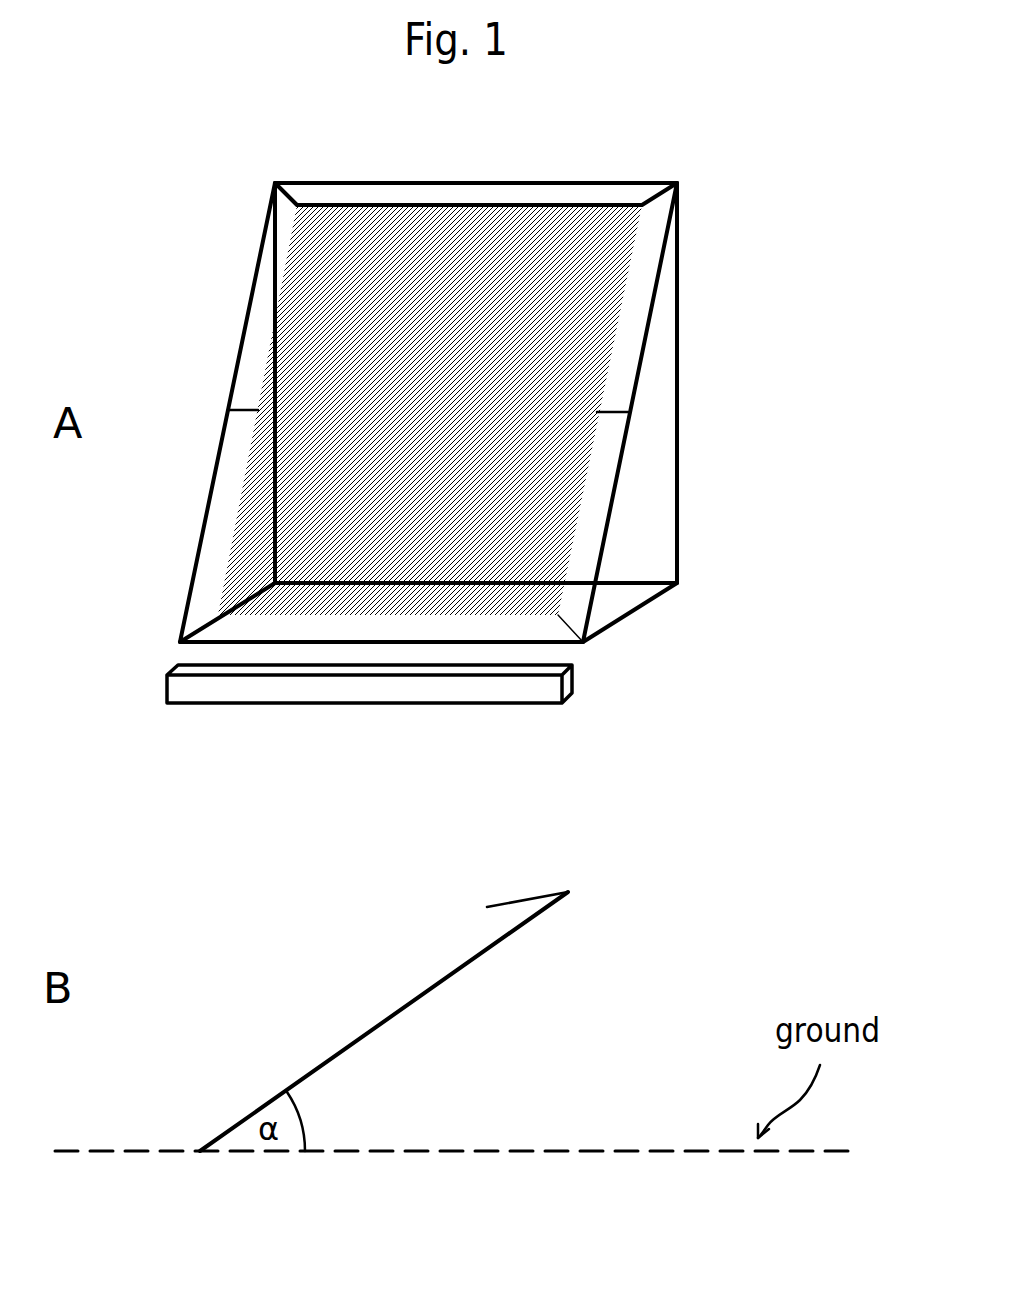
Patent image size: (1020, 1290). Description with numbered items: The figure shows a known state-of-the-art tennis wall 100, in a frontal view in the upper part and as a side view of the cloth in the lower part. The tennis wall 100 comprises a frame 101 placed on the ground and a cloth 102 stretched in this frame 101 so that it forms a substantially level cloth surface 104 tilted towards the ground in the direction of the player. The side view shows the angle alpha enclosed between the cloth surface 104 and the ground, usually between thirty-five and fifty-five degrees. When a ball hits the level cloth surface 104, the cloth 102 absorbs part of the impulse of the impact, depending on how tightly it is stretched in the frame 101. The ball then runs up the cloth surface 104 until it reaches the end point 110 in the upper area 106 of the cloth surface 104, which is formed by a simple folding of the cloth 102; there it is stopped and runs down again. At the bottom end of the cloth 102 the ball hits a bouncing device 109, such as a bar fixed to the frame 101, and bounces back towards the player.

The tennis wall 100 is at (713, 595).
The frame 101 is at (688, 413).
The cloth 102 is at (262, 370).
The level cloth surface 104 is at (453, 425).
The upper area of the cloth surface 106 is at (238, 183).
The bouncing device 109 is at (595, 685).
The end point 110 is at (503, 920).